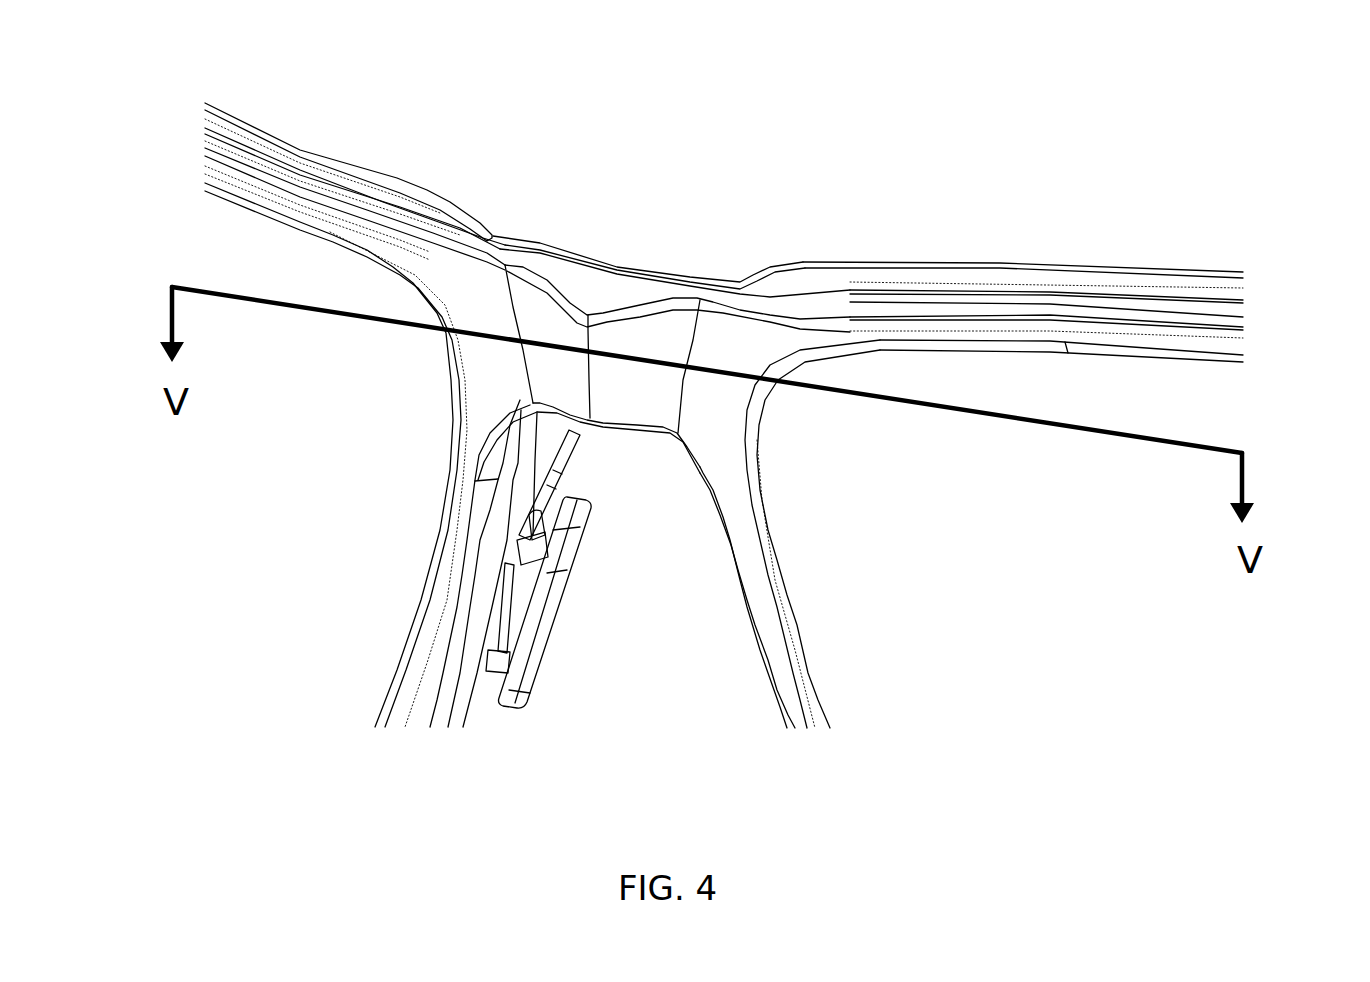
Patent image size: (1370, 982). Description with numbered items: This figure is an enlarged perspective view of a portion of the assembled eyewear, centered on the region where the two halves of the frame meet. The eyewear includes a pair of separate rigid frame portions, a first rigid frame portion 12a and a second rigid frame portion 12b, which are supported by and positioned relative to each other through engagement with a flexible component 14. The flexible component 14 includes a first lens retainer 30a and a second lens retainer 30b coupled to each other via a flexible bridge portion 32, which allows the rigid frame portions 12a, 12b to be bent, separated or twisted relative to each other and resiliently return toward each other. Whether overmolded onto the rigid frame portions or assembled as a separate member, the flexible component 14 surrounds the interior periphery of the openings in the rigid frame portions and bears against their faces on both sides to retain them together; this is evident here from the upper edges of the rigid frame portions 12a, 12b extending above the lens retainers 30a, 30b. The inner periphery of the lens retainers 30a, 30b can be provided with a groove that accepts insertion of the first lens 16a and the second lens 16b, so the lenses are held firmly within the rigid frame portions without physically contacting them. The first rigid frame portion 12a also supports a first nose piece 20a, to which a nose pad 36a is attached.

The first rigid frame portion 12a is at (393, 185).
The second rigid frame portion 12b is at (1028, 272).
The flexible component 14 is at (797, 171).
The first lens 16a is at (368, 429).
The second lens 16b is at (970, 504).
The first nose piece 20a is at (573, 467).
The first lens retainer 30a is at (223, 180).
The second lens retainer 30b is at (1204, 337).
The flexible bridge portion 32 is at (632, 294).
The nose pad 36a is at (568, 607).